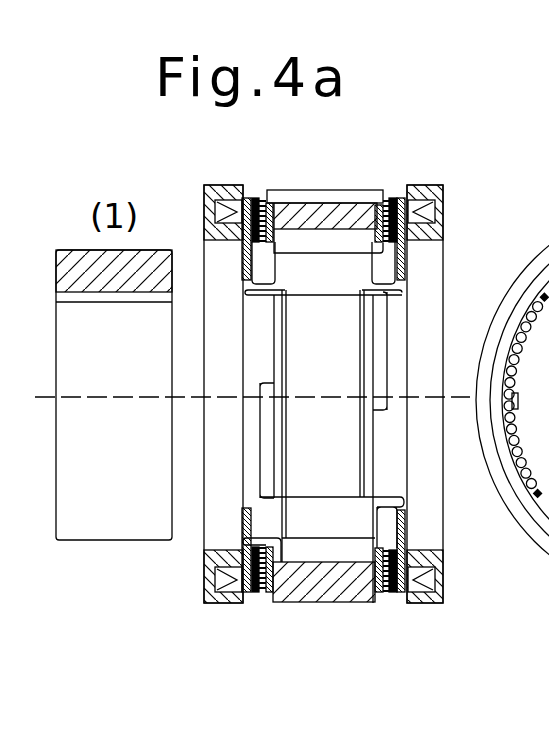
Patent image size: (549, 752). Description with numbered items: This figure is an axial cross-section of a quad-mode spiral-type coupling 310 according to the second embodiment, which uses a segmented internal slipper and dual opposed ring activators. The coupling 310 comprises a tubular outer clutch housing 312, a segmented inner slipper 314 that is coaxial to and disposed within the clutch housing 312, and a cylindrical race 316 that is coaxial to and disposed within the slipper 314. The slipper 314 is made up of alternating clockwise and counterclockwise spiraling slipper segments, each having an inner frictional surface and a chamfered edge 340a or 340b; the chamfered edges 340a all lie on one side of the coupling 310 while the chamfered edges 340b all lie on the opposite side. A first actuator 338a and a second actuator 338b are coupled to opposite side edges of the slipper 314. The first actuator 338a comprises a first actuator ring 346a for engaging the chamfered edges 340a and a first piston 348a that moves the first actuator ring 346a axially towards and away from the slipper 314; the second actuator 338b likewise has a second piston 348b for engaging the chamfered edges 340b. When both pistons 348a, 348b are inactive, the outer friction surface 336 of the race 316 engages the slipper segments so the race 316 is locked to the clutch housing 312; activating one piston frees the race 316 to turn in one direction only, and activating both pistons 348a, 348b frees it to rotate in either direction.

The quad-mode spiral-type coupling 310 is at (96, 627).
The tubular outer clutch housing 312 is at (295, 588).
The segmented inner slipper 314 is at (316, 238).
The cylindrical race 316 is at (84, 272).
The outer friction surface 336 is at (93, 542).
The first actuator 338a is at (436, 185).
The second actuator 338b is at (225, 186).
The chamfered edge 340a is at (374, 208).
The chamfered edge 340b is at (270, 312).
The first actuator ring 346a is at (403, 250).
The first piston 348a is at (423, 580).
The second piston 348b is at (227, 578).